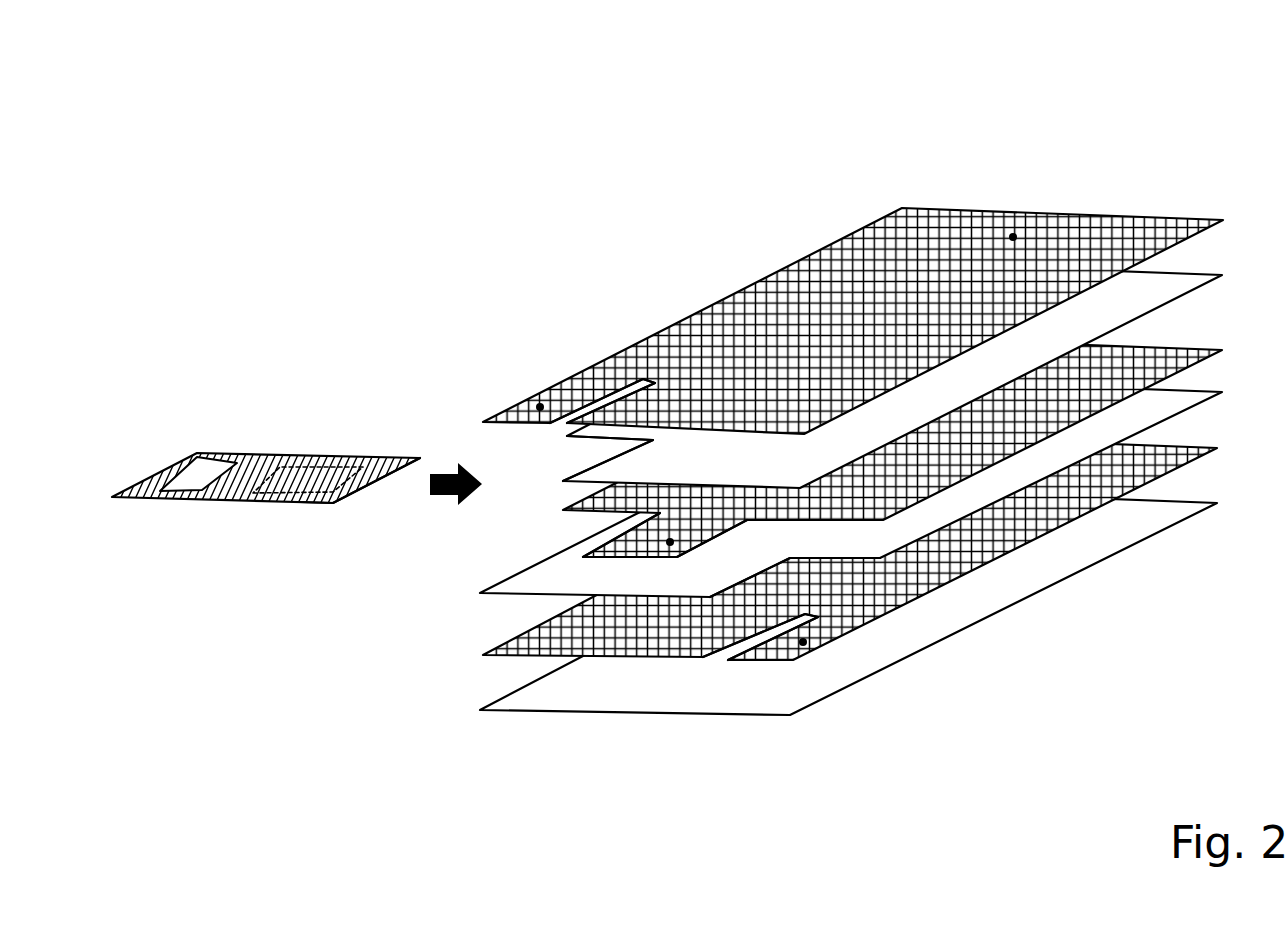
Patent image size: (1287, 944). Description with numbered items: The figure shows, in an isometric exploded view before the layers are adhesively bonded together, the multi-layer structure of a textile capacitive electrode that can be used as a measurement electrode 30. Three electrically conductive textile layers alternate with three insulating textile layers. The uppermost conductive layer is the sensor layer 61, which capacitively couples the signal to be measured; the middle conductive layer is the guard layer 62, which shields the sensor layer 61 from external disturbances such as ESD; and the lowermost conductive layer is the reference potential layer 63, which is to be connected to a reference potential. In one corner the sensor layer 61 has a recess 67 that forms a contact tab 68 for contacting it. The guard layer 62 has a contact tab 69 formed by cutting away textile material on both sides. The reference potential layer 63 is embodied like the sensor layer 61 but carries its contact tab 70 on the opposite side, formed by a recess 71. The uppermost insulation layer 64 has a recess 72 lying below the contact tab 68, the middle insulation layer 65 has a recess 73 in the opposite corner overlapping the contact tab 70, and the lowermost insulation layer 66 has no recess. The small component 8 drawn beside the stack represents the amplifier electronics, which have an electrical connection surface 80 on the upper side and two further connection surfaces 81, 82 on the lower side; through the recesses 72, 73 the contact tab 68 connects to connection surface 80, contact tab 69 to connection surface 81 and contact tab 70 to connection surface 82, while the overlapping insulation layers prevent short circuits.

The measurement electrode 30 is at (623, 100).
The sensor layer 61 is at (1013, 237).
The guard layer 62 is at (1177, 352).
The reference potential layer 63 is at (1190, 452).
The uppermost insulation layer 64 is at (1170, 283).
The middle insulation layer 65 is at (1180, 398).
The lowermost insulation layer 66 is at (1163, 512).
The recess 67 is at (585, 408).
The contact tab 68 is at (540, 407).
The contact tab 69 is at (670, 542).
The contact tab 70 is at (805, 648).
The recess 71 is at (735, 648).
The recess 72 is at (583, 459).
The recess 73 is at (875, 552).
The card 8 is at (210, 502).
The electrical connection surface 80 is at (203, 453).
The electrical connection surface 81 is at (262, 505).
The electrical connection surface 82 is at (333, 502).